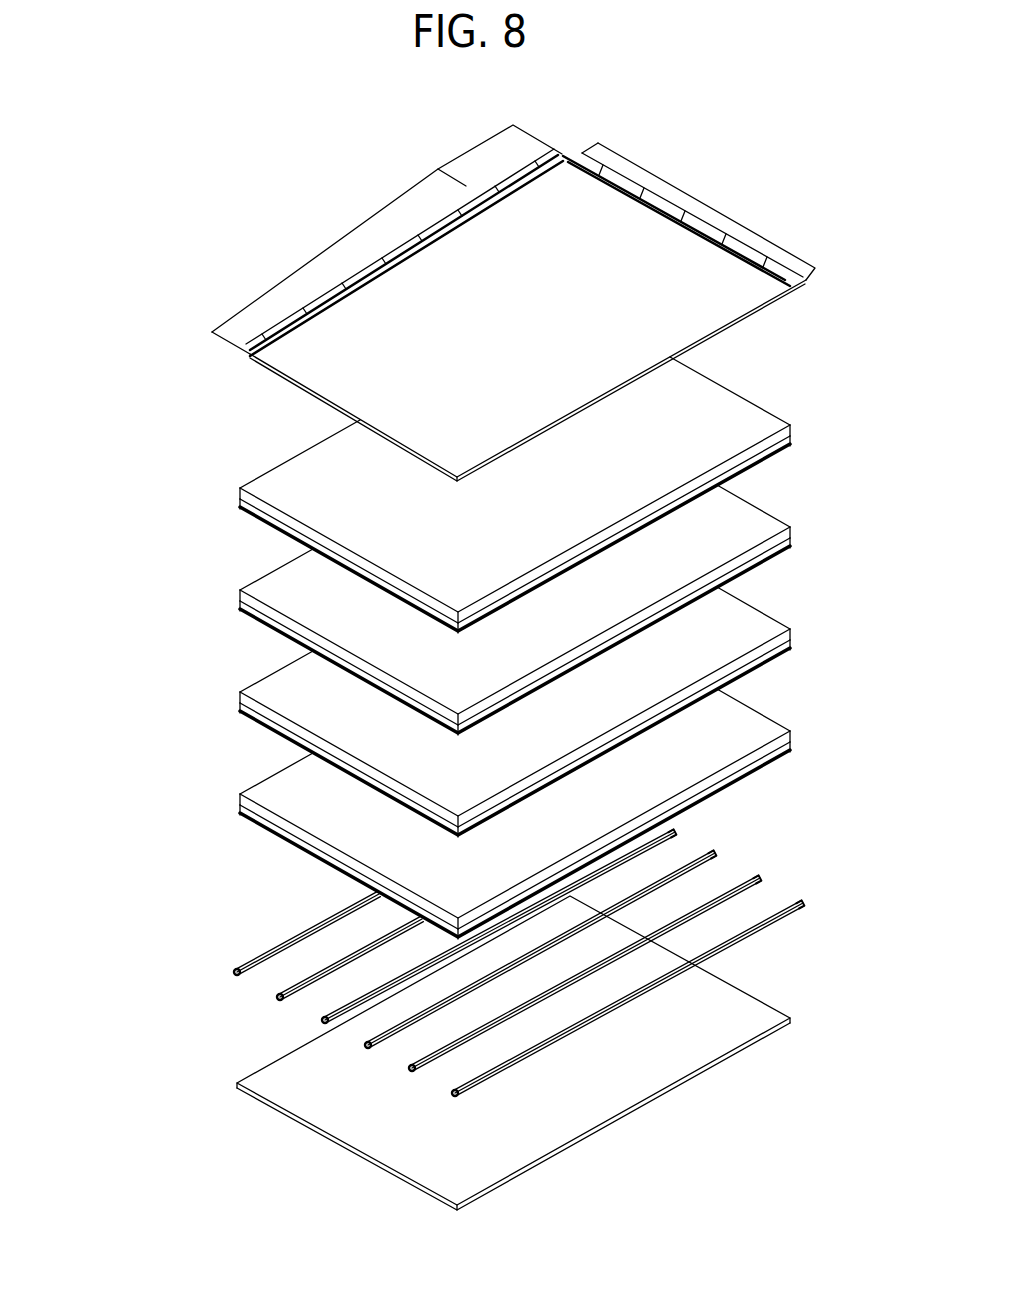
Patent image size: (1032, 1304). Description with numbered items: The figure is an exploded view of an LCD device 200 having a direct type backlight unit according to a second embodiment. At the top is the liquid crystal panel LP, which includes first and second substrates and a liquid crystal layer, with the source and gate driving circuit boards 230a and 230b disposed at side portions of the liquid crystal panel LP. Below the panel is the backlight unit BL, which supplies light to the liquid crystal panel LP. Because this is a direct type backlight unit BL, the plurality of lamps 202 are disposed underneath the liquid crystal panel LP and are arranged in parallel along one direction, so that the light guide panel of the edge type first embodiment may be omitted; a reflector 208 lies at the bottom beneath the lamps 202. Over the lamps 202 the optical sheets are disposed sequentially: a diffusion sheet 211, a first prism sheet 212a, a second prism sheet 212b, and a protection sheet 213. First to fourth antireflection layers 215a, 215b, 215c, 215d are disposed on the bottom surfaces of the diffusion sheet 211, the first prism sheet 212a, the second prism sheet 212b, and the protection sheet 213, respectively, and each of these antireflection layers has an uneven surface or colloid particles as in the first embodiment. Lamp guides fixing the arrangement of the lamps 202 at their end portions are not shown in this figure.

The LCD device 200 is at (108, 1102).
The backlight unit BL is at (193, 465).
The liquid crystal panel LP is at (790, 333).
The source driving circuit board 230a is at (500, 152).
The gate driving circuit board 230b is at (622, 160).
The protection sheet 213 is at (792, 427).
The fourth antireflection layer 215d is at (792, 448).
The second prism sheet 212b is at (792, 529).
The third antireflection layer 215c is at (792, 550).
The first prism sheet 212a is at (792, 631).
The second antireflection layer 215b is at (792, 652).
The diffusion sheet 211 is at (792, 733).
The first antireflection layer 215a is at (792, 754).
The lamps 202 is at (790, 872).
The reflector 208 is at (763, 1017).